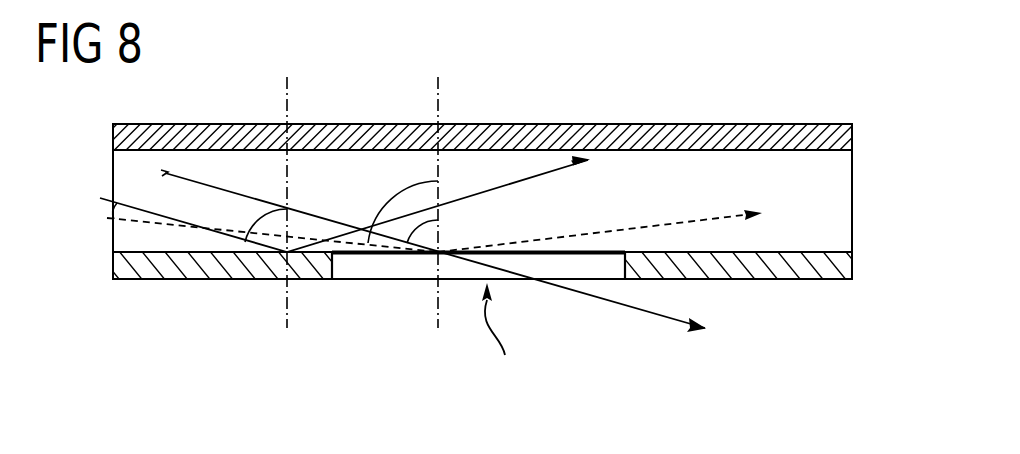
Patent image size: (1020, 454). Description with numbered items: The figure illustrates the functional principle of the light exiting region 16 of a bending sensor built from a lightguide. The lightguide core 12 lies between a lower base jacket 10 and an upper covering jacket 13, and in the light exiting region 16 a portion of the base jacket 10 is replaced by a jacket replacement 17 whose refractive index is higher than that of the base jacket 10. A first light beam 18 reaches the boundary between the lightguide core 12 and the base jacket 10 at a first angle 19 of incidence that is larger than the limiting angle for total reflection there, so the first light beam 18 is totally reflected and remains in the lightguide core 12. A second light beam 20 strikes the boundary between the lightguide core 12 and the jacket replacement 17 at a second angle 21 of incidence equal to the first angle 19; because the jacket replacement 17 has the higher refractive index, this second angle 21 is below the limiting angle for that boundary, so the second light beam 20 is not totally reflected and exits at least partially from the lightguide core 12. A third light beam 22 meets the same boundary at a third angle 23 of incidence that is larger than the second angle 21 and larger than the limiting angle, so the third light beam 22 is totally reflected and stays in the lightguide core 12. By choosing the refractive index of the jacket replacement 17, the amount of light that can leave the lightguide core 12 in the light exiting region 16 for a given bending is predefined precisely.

The base jacket 10 is at (838, 263).
The lightguide core 12 is at (840, 186).
The covering jacket 13 is at (735, 131).
The light exiting region 16 is at (502, 338).
The jacket replacement 17 is at (375, 279).
The first light beam 18 is at (100, 199).
The first angle of incidence 19 is at (256, 225).
The second light beam 20 is at (165, 173).
The second angle of incidence 21 is at (432, 232).
The third light beam 22 is at (628, 229).
The third angle of incidence 23 is at (380, 206).